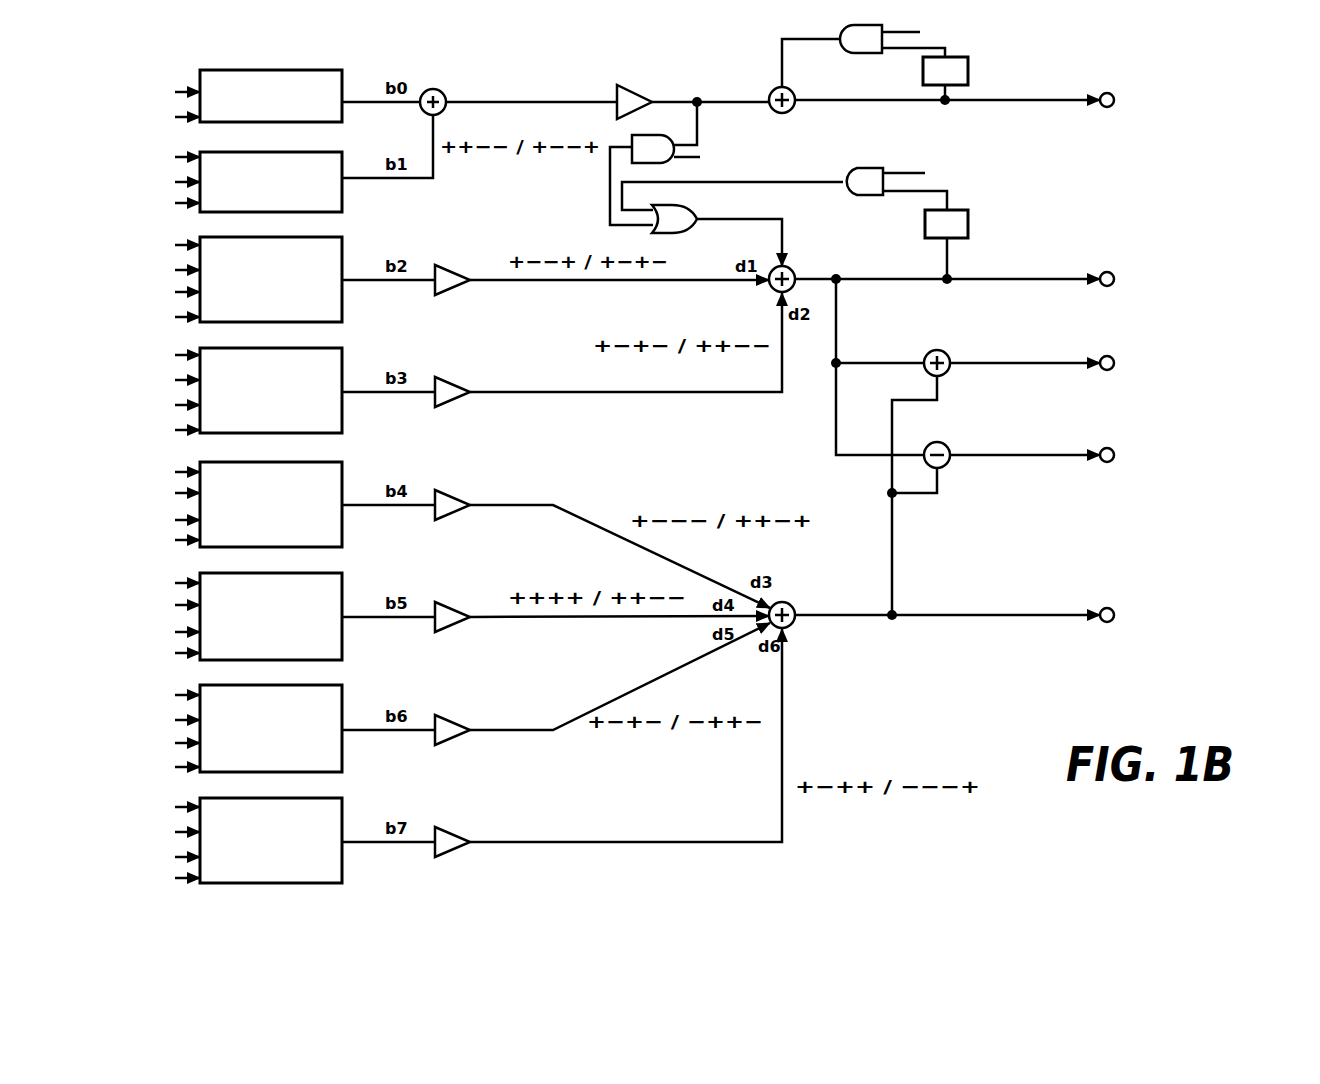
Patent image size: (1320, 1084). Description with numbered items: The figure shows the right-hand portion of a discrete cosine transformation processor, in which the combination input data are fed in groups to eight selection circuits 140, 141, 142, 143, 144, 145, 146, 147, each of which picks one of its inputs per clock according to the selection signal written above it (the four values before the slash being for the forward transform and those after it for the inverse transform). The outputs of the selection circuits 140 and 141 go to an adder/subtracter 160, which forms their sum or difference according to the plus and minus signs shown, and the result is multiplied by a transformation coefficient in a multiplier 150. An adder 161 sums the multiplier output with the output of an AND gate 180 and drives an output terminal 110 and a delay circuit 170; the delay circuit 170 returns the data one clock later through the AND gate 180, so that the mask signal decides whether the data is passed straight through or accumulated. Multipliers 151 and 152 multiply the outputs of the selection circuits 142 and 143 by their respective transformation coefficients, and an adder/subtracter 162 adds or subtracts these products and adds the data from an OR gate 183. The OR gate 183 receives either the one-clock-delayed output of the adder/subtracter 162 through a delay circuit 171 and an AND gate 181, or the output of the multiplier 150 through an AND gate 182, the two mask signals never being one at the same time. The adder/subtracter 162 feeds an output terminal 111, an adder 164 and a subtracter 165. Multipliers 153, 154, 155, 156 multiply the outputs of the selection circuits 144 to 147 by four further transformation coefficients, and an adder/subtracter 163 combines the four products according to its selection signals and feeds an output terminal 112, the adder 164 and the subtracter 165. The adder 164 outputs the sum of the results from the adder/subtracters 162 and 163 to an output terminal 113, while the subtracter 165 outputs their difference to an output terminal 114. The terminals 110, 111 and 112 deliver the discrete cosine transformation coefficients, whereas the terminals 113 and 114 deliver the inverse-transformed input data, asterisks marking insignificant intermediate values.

The output terminal 110 is at (1112, 94).
The output terminal 111 is at (1112, 273).
The output terminal 112 is at (1112, 609).
The output terminal 113 is at (1112, 357).
The output terminal 114 is at (1112, 449).
The selection circuit 140 is at (342, 92).
The selection circuit 141 is at (342, 160).
The selection circuit 142 is at (342, 257).
The selection circuit 143 is at (342, 368).
The selection circuit 144 is at (342, 482).
The selection circuit 145 is at (342, 593).
The selection circuit 146 is at (342, 705).
The selection circuit 147 is at (342, 818).
The multiplier 150 is at (652, 85).
The multiplier 151 is at (438, 263).
The multiplier 152 is at (438, 375).
The multiplier 153 is at (438, 488).
The multiplier 154 is at (438, 600).
The multiplier 155 is at (438, 713).
The multiplier 156 is at (438, 825).
The adder/subtracter 160 is at (446, 92).
The adder 161 is at (792, 109).
The adder/subtracter 162 is at (792, 270).
The adder/subtracter 163 is at (795, 607).
The adder 164 is at (950, 357).
The subtracter 165 is at (950, 449).
The delay circuit 170 is at (968, 70).
The delay circuit 171 is at (968, 222).
The AND gate 180 is at (857, 55).
The AND gate 181 is at (870, 153).
The AND gate 182 is at (640, 134).
The OR gate 183 is at (670, 204).